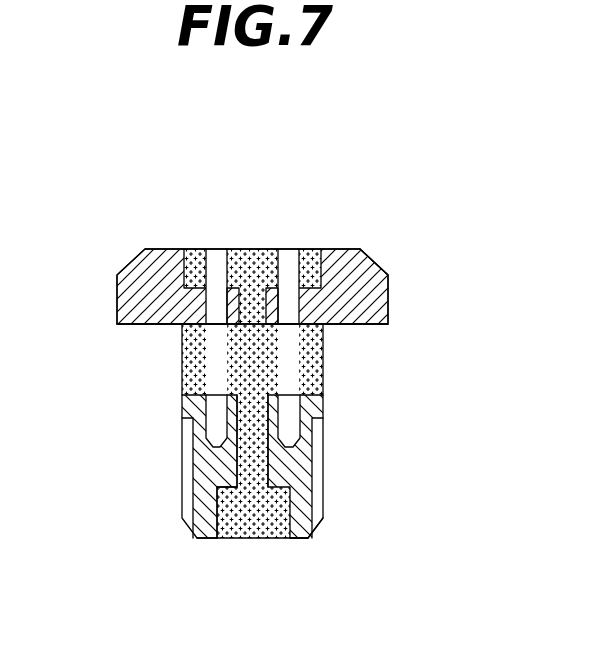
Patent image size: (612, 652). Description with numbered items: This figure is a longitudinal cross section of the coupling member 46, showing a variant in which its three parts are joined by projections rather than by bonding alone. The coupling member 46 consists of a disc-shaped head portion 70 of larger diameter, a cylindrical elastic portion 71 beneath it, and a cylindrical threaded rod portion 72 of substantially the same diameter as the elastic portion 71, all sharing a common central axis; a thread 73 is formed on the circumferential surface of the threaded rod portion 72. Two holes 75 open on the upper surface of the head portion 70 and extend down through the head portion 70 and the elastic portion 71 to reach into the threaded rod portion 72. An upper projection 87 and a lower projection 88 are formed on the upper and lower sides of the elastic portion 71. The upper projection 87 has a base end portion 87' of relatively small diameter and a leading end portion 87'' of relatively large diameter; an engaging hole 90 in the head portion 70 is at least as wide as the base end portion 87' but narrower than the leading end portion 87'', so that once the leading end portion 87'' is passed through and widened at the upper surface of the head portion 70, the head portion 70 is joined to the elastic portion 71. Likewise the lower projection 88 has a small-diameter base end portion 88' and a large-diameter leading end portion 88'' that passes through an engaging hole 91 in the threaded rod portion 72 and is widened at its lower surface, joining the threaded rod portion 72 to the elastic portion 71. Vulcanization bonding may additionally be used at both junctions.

The coupling member 46 is at (363, 213).
The head portion 70 is at (117, 290).
The elastic portion 71 is at (190, 364).
The threaded rod portion 72 is at (307, 540).
The thread 73 is at (320, 498).
The holes 75 is at (216, 250).
The upper projection 87 is at (258, 275).
The base end portion 87' is at (312, 325).
The leading end portion 87'' is at (388, 252).
The lower projection 88 is at (253, 544).
The base end portion 88' is at (317, 441).
The leading end portion 88'' is at (168, 512).
The engaging hole 90 is at (238, 307).
The engaging hole 91 is at (237, 461).